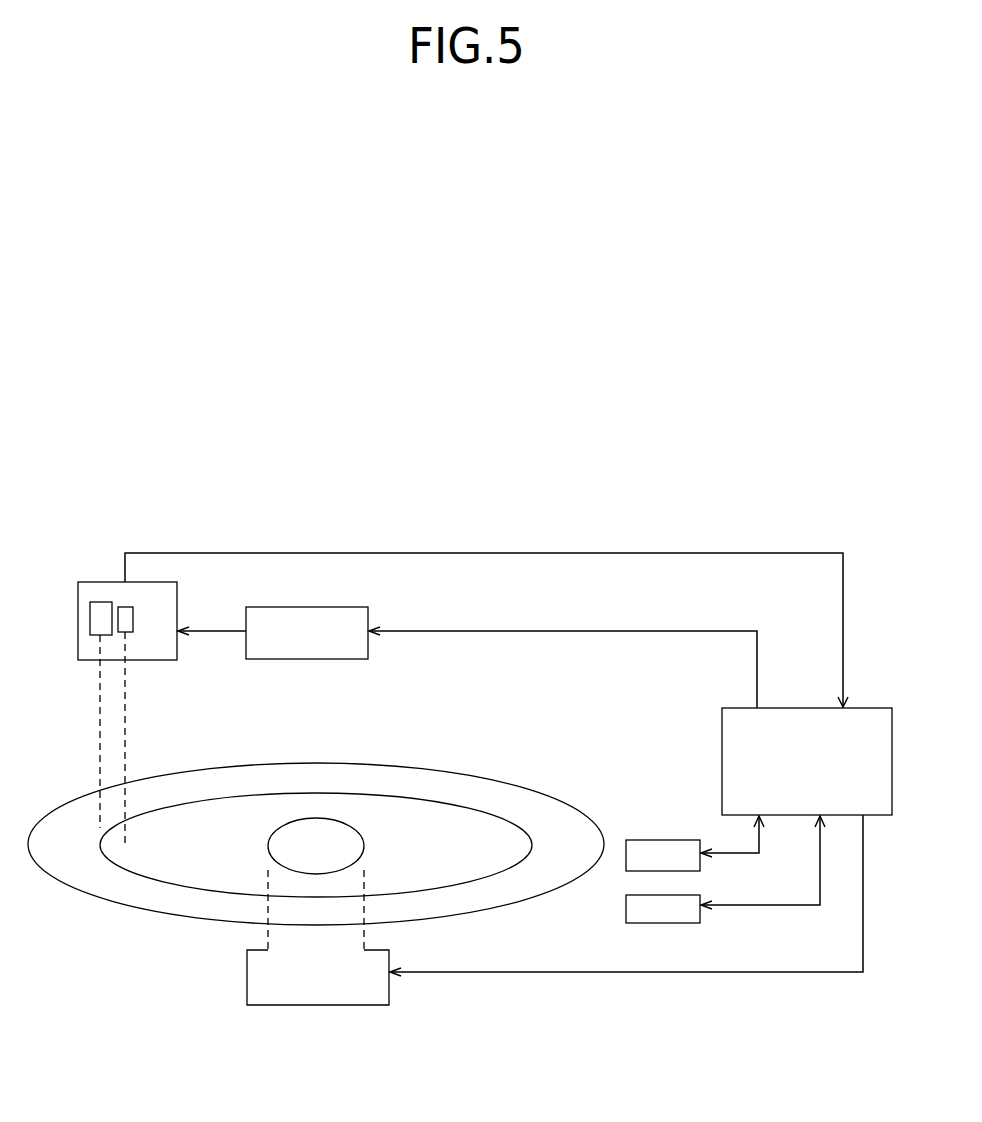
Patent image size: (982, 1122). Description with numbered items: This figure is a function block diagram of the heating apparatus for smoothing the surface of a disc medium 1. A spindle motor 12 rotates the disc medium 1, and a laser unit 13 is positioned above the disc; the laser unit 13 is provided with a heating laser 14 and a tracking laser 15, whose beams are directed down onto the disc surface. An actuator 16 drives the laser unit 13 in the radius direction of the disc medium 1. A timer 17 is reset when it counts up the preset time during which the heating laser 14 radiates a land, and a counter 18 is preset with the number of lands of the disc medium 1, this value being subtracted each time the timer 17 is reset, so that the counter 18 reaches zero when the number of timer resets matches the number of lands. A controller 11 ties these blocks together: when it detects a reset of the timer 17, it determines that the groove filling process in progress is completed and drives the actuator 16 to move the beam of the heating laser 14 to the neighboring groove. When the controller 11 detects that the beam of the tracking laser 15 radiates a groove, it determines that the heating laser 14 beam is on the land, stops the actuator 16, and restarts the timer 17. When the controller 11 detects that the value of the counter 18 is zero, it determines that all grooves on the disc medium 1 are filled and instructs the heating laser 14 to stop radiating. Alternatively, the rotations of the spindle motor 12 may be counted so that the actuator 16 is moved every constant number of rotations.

The disc medium 1 is at (62, 812).
The controller 11 is at (722, 708).
The spindle motor 12 is at (245, 1003).
The laser unit 13 is at (78, 582).
The heating laser 14 is at (90, 635).
The tracking laser 15 is at (125, 632).
The actuator 16 is at (368, 610).
The timer 17 is at (660, 840).
The counter 18 is at (640, 923).